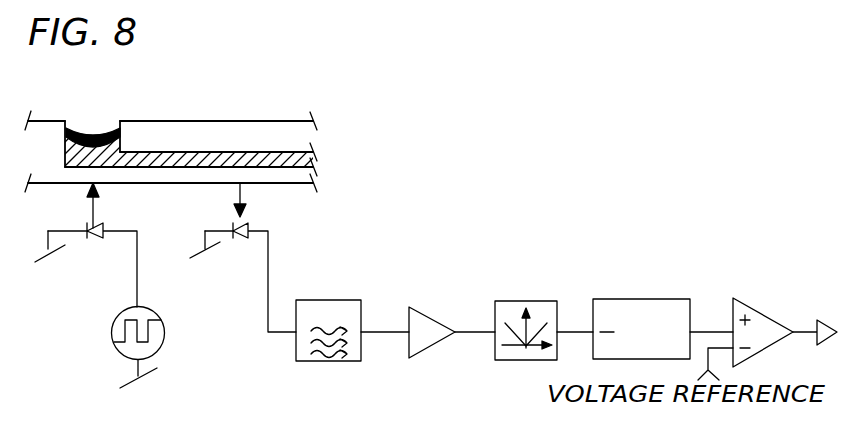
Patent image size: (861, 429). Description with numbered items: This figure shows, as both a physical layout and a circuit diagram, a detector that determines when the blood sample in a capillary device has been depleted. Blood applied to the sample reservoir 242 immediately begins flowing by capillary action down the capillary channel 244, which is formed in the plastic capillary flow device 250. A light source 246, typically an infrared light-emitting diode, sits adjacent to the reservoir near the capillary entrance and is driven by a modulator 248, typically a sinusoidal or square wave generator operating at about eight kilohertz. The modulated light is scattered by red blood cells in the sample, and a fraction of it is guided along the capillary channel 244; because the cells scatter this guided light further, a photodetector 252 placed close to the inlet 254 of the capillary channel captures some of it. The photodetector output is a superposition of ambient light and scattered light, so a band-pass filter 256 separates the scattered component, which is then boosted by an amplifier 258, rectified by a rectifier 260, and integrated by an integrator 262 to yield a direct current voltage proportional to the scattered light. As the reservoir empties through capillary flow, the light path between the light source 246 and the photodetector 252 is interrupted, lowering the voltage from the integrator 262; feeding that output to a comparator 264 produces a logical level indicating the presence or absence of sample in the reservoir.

The sample reservoir 242 is at (87, 124).
The capillary channel 244 is at (232, 152).
The light source 246 is at (100, 227).
The modulator 248 is at (113, 333).
The plastic capillary flow device 250 is at (228, 128).
The photodetector 252 is at (247, 227).
The inlet of the capillary channel 254 is at (120, 152).
The band-pass filter 256 is at (313, 300).
The amplifier 258 is at (420, 303).
The rectifier 260 is at (532, 301).
The integrator 262 is at (630, 299).
The comparator 264 is at (743, 300).